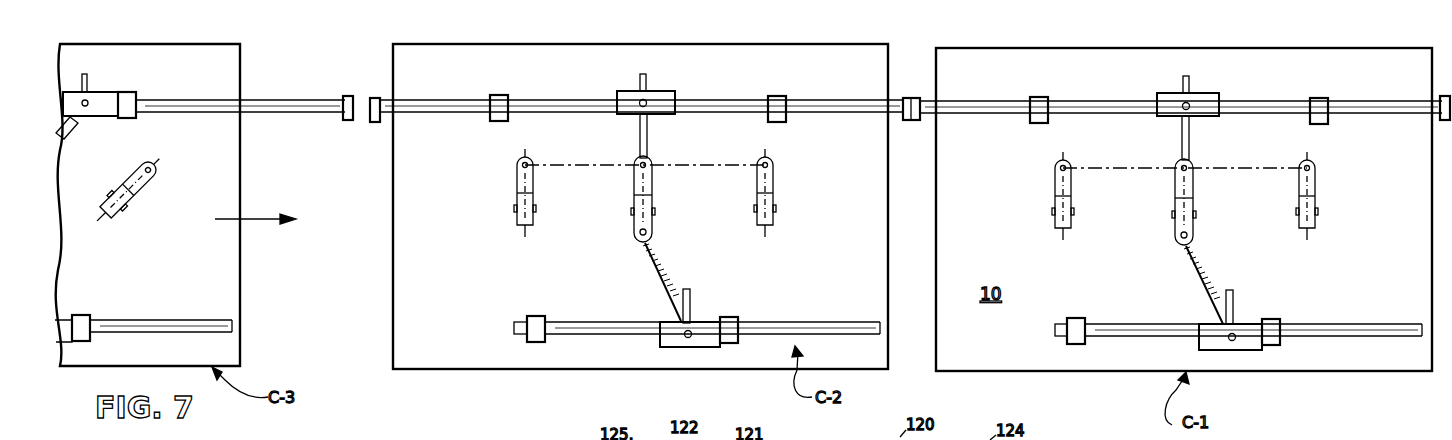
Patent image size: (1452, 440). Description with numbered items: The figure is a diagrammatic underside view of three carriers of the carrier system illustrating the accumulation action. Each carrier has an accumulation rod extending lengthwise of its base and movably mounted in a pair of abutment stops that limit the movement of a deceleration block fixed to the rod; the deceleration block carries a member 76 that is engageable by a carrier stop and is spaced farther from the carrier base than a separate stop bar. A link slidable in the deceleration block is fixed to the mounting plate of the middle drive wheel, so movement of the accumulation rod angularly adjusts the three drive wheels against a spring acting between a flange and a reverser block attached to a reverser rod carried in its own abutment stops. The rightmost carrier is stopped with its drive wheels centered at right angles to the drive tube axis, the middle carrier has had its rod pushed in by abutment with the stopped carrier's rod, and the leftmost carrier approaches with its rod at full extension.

The member 76 is at (1181, 80).